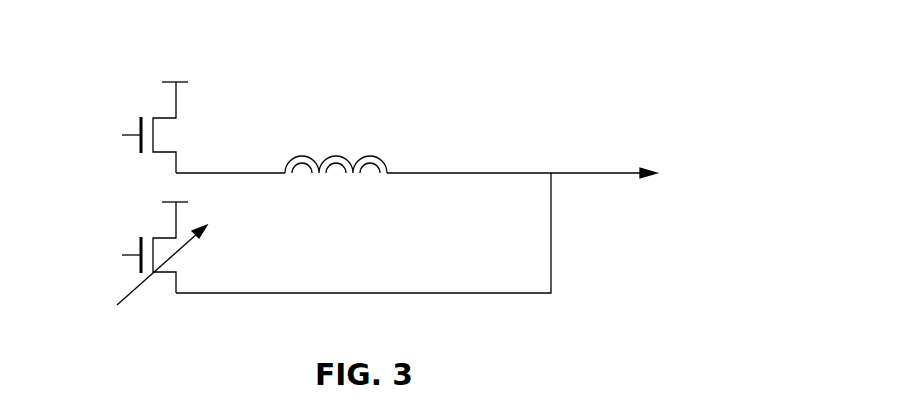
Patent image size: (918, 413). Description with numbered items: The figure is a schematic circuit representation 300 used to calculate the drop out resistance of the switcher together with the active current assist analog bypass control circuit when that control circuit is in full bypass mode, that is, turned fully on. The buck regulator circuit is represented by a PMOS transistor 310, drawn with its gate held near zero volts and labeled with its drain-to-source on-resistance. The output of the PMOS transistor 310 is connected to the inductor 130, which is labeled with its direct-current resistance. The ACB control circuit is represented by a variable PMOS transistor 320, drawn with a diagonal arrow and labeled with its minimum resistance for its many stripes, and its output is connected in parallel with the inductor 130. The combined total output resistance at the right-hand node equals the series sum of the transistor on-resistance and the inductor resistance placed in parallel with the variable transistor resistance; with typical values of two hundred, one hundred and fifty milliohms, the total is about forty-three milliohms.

The circuit representation 300 is at (488, 72).
The PMOS transistor 310 is at (176, 100).
The variable PMOS transistor 320 is at (176, 220).
The inductor 130 is at (381, 158).